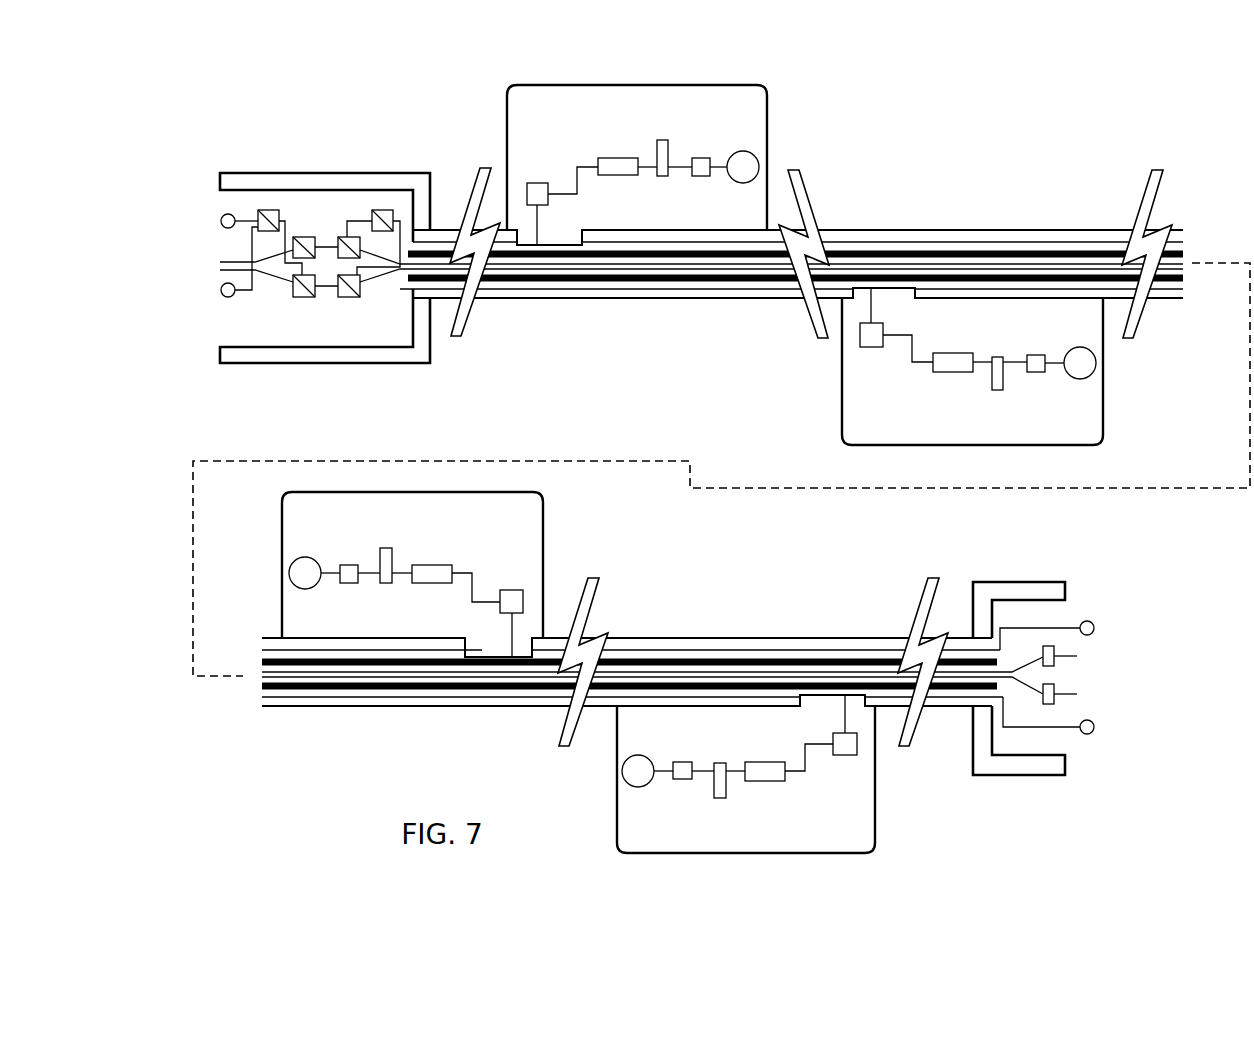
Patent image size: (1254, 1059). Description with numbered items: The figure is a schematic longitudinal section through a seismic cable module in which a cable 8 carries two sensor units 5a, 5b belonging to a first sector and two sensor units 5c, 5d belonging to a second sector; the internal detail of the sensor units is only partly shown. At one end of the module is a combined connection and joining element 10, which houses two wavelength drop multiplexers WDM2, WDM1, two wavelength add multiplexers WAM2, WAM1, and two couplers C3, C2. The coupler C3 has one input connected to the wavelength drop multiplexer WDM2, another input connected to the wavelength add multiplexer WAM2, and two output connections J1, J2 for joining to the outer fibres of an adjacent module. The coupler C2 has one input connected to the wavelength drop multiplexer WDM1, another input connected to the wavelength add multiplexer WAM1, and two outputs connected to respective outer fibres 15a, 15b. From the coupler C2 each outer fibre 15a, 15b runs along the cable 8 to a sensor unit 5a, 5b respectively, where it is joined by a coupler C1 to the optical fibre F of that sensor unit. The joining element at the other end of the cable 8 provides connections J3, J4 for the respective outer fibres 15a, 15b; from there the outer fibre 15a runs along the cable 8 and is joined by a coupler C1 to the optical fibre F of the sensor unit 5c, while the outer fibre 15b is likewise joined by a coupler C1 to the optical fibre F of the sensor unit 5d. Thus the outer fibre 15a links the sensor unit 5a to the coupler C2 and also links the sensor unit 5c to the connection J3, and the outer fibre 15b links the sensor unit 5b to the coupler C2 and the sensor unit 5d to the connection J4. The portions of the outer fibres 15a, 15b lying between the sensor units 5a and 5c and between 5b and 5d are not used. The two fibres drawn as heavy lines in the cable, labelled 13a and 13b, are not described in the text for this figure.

The combined connection and joining element 10 is at (368, 173).
The cable 8 is at (893, 230).
The outer fibre 15a is at (446, 238).
The outer fibre 15b is at (495, 290).
The first optical fiber 13a is at (647, 260).
The second optical fiber 13b is at (585, 283).
The output connection J1 is at (227, 214).
The output connection J2 is at (228, 297).
The connection J3 is at (1087, 620).
The connection J4 is at (1087, 734).
The coupler C1 is at (537, 183).
The coupler C2 is at (383, 209).
The coupler C3 is at (268, 209).
The wavelength drop multiplexer WDM1 is at (345, 237).
The wavelength drop multiplexer WDM2 is at (306, 237).
The wavelength add multiplexer WAM1 is at (351, 297).
The wavelength add multiplexer WAM2 is at (303, 297).
The sensor unit 5a is at (660, 85).
The sensor unit 5b is at (842, 408).
The sensor unit 5c is at (543, 530).
The sensor unit 5d is at (617, 810).
The optical fibre F is at (563, 188).